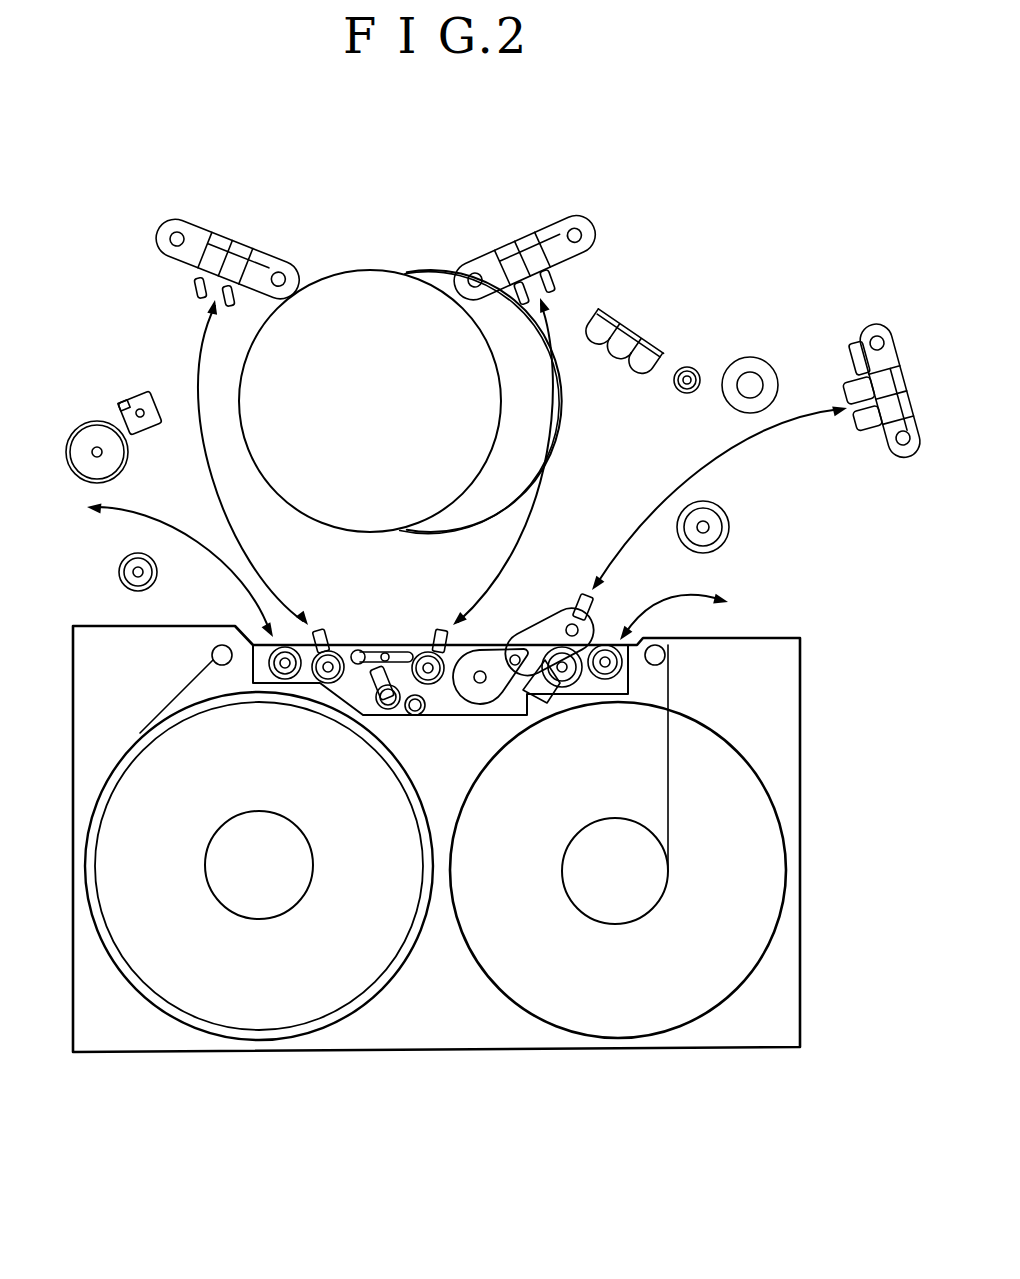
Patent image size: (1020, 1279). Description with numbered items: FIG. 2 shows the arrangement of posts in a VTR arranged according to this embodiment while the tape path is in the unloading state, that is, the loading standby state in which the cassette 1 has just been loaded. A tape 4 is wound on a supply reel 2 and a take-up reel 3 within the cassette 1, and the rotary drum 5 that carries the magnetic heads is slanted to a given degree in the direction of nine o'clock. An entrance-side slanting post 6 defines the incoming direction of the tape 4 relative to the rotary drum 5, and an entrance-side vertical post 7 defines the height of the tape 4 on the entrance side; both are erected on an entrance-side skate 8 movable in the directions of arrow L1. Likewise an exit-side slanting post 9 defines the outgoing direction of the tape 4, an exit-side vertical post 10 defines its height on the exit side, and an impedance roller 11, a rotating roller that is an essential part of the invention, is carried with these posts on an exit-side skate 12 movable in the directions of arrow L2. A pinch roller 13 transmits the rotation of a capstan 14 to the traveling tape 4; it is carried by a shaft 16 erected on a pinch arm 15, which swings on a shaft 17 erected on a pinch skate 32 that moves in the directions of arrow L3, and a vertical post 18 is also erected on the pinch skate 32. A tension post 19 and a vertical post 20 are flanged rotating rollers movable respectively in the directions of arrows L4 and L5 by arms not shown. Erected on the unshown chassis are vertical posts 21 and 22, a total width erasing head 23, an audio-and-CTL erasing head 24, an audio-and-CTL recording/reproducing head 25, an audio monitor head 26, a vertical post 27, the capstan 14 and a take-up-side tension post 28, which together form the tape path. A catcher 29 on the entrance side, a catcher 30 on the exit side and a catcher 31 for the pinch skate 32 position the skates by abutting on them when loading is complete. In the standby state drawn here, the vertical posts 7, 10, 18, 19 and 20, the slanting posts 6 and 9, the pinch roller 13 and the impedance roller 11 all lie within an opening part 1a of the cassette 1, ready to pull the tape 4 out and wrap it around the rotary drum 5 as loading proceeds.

The cassette 1 is at (418, 1020).
The opening part 1a is at (253, 624).
The supply reel 2 is at (258, 1004).
The take-up reel 3 is at (755, 838).
The tape 4 is at (672, 690).
The rotary drum 5 is at (366, 283).
The entrance-side slanting post 6 is at (372, 652).
The entrance-side vertical post 7 is at (322, 642).
The entrance-side skate 8 is at (327, 678).
The exit-side slanting post 9 is at (438, 640).
The exit-side vertical post 10 is at (433, 684).
The impedance roller 11 is at (382, 700).
The exit-side skate 12 is at (418, 714).
The pinch roller 13 is at (482, 655).
The capstan 14 is at (751, 384).
The pinch arm 15 is at (578, 600).
The shaft 16 is at (481, 686).
The shaft 17 is at (585, 627).
The vertical post 18 is at (563, 688).
The tension post 19 is at (283, 672).
The vertical post 20 is at (607, 680).
The vertical post 21 is at (124, 577).
The vertical post 22 is at (97, 435).
The total width erasing head 23 is at (147, 397).
The audio-and-CTL erasing head 24 is at (603, 328).
The audio-and-CTL recording/reproducing head 25 is at (627, 343).
The audio monitor head 26 is at (653, 352).
The vertical post 27 is at (695, 370).
The take-up-side tension post 28 is at (716, 518).
The catcher 29 is at (193, 237).
The catcher 30 is at (560, 232).
The catcher 31 is at (877, 430).
The pinch skate 32 is at (541, 700).
The arrow L1 is at (233, 533).
The arrow L2 is at (560, 395).
The arrow L3 is at (671, 493).
The arrow L4 is at (175, 520).
The arrow L5 is at (683, 594).